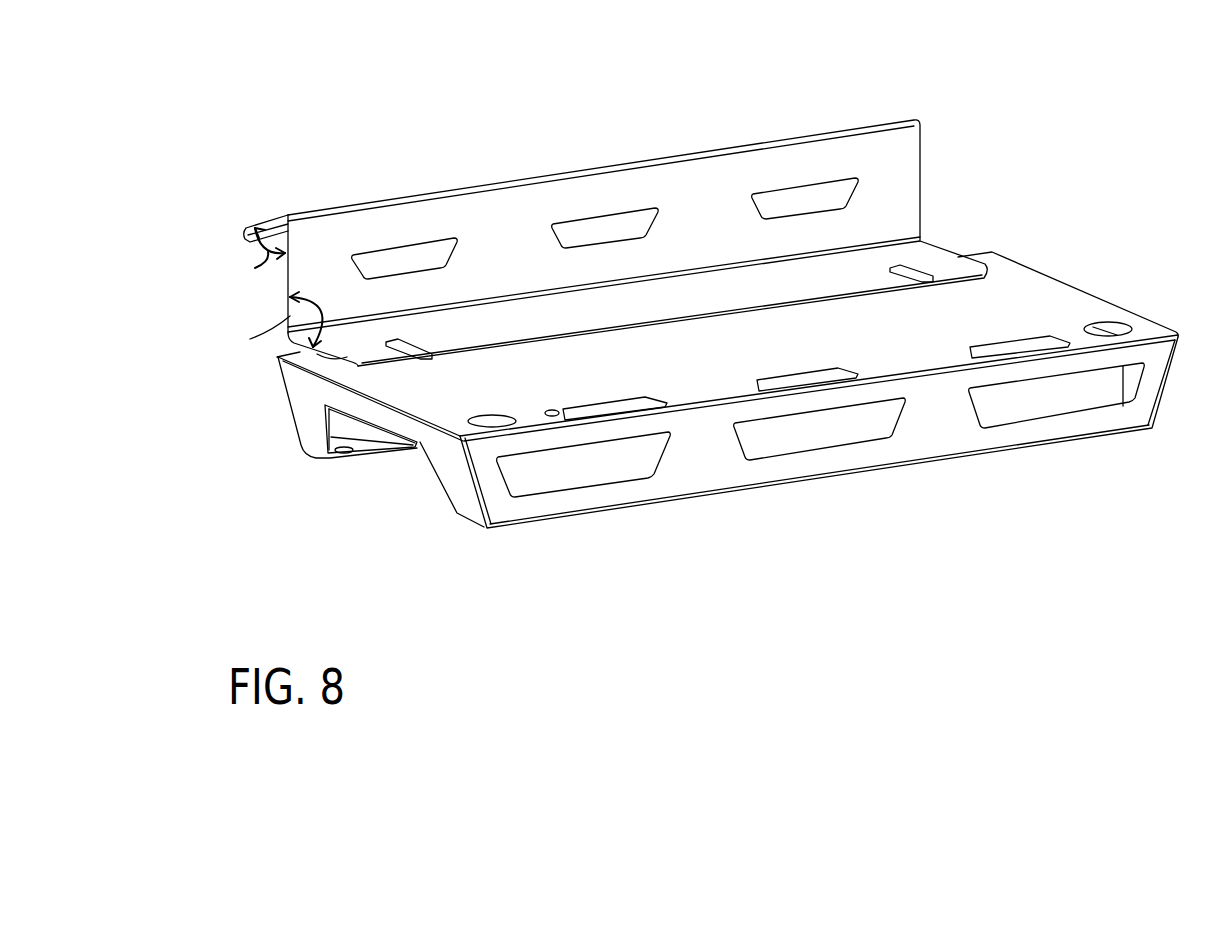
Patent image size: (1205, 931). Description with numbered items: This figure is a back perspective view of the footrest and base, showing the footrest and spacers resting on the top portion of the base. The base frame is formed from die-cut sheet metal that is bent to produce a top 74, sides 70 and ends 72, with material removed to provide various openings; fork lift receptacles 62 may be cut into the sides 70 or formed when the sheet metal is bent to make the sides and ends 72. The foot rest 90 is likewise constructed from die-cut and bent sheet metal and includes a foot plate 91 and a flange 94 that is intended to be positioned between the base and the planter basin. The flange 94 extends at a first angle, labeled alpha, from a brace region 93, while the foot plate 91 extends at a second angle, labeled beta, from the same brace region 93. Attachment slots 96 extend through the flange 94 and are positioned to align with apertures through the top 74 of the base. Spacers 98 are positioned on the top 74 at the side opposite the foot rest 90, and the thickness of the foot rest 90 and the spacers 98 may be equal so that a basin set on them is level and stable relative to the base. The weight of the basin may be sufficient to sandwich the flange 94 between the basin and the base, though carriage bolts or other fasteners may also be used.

The fork lift receptacles 62 is at (651, 307).
The sides 70 is at (703, 467).
The ends 72 is at (308, 413).
The top 74 is at (727, 364).
The foot rest 90 is at (493, 182).
The foot plate 91 is at (252, 230).
The brace region 93 is at (592, 227).
The flange 94 is at (708, 298).
The attachment slots 96 is at (397, 342).
The spacers 98 is at (1002, 348).